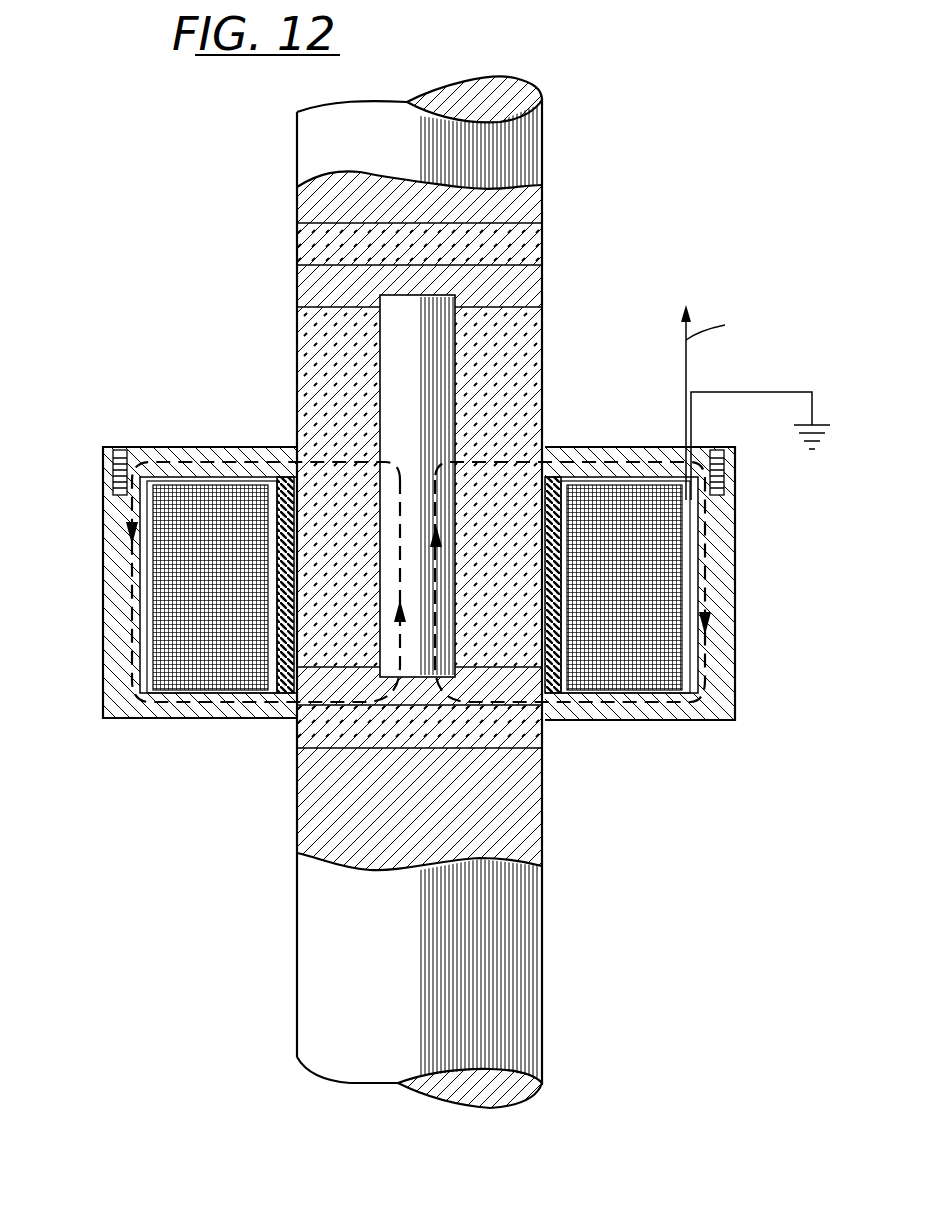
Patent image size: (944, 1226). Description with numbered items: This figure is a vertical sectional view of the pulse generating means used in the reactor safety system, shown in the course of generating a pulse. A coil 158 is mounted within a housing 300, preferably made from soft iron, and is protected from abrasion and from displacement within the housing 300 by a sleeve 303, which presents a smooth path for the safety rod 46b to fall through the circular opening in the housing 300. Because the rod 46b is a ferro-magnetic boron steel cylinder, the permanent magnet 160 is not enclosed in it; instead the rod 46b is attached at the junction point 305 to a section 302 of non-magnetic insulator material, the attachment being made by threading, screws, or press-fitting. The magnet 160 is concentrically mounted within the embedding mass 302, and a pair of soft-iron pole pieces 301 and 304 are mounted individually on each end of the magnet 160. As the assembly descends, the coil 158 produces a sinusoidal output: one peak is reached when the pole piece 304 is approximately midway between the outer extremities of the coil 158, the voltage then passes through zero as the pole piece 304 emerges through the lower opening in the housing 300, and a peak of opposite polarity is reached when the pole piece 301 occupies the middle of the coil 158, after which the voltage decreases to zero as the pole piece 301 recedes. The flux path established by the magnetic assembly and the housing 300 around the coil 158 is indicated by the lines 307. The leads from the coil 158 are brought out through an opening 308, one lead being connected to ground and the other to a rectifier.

The safety rod 46b is at (318, 205).
The pole piece 301 is at (320, 285).
The section (embedding mass) 302 is at (320, 340).
The sleeve 303 is at (283, 480).
The pole piece 304 is at (510, 695).
The junction point 305 is at (535, 228).
The permanent magnet 160 is at (395, 370).
The housing 300 is at (176, 452).
The flux path lines 307 is at (130, 612).
The opening 308 is at (703, 480).
The coil 158 is at (235, 672).